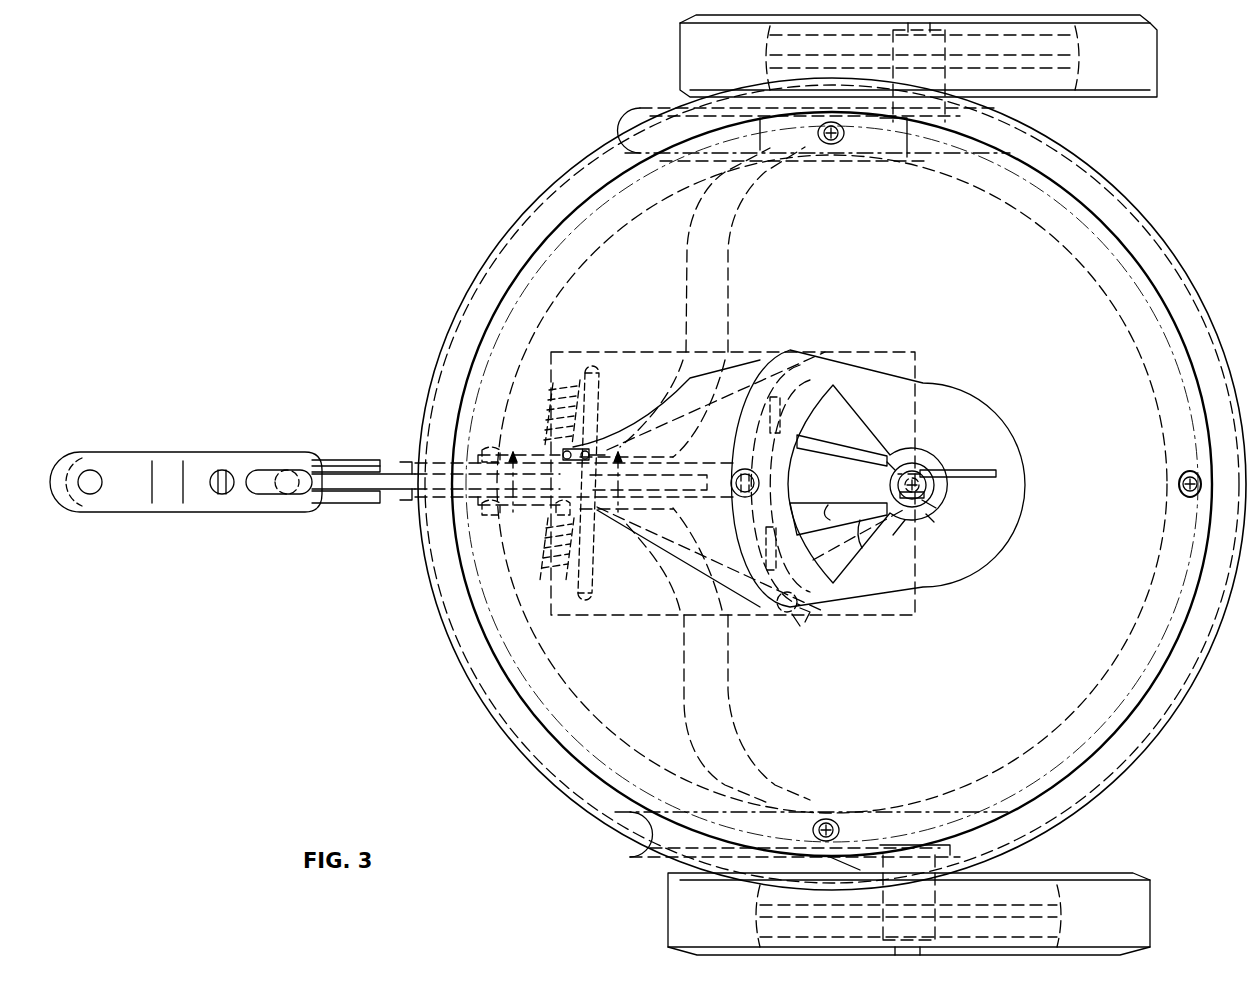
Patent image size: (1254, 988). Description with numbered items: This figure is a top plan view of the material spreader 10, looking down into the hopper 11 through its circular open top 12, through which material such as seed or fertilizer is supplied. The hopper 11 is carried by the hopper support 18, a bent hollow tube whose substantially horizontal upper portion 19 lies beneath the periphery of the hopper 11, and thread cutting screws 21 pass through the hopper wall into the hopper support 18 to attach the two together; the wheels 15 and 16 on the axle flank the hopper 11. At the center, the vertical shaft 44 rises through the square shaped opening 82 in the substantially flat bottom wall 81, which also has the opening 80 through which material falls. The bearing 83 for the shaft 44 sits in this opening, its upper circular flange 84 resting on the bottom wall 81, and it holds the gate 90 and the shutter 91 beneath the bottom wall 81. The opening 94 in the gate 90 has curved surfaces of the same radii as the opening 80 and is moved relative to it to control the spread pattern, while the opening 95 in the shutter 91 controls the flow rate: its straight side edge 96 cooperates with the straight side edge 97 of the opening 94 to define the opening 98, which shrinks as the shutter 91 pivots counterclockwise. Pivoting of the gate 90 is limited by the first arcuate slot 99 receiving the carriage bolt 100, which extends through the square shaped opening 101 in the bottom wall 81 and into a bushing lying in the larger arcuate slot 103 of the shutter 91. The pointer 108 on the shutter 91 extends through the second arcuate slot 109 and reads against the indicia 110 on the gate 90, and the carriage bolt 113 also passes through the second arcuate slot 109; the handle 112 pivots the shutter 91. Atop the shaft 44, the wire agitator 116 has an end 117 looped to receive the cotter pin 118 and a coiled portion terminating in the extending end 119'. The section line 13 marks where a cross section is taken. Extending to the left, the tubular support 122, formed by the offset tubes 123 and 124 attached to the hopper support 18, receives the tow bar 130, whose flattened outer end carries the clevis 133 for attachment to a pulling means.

The material spreader 10 is at (1118, 790).
The hopper 11 is at (458, 673).
The open top 12 is at (560, 745).
The section line 13- 13 is at (566, 482).
The wheel 15 is at (1160, 88).
The wheel 16 is at (1152, 896).
The hopper support 18 is at (1145, 602).
The upper portion 19 is at (1078, 705).
The thread cutting screw 21 is at (836, 144).
The vertical shaft 44 is at (900, 452).
The opening 80 is at (866, 418).
The bottom wall 81 is at (1005, 528).
The square shaped opening 82 is at (900, 540).
The bearing 83 is at (936, 512).
The upper circular flange 84 is at (930, 522).
The gate 90 is at (612, 617).
The shutter 91 is at (805, 625).
The opening 94 is at (842, 444).
The opening 95 is at (830, 505).
The straight side edge 96 is at (862, 548).
The straight side edge 97 is at (842, 524).
The opening 98 is at (845, 540).
The first arcuate slot 99 is at (742, 522).
The carriage bolt 100 is at (740, 474).
The square shaped opening 101 is at (760, 480).
The arcuate slot 103 is at (787, 613).
The pointer 108 is at (547, 522).
The second arcuate slot 109 is at (592, 582).
The indicia 110 is at (548, 590).
The handle 112 is at (382, 462).
The carriage bolt 113 is at (578, 452).
The agitator 116 is at (895, 472).
The end 117 is at (938, 492).
The cotter pin 118 is at (925, 462).
The extending end 119' is at (950, 458).
The tubular support 122 is at (682, 676).
The offset tube 123 is at (731, 685).
The offset tube 124 is at (735, 265).
The tow bar 130 is at (343, 503).
The clevis 133 is at (290, 512).